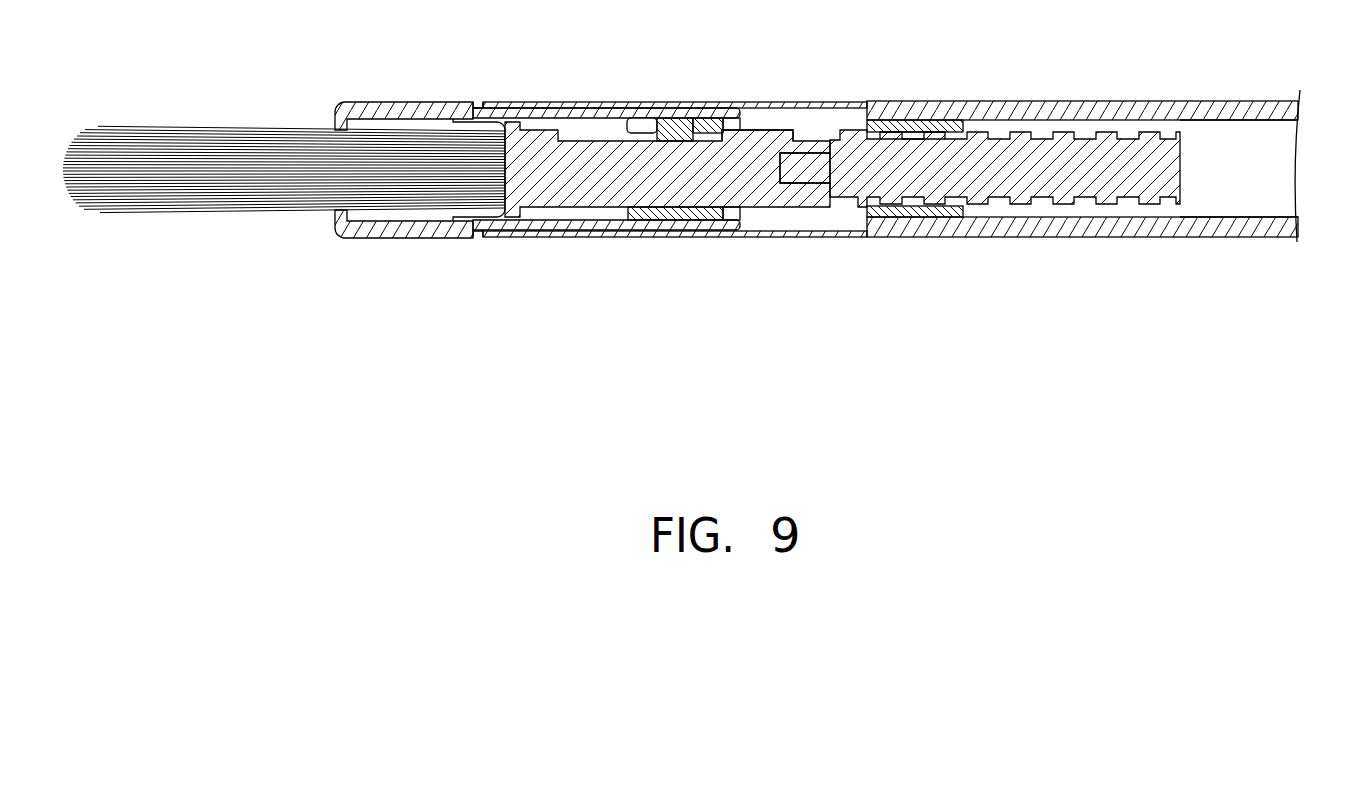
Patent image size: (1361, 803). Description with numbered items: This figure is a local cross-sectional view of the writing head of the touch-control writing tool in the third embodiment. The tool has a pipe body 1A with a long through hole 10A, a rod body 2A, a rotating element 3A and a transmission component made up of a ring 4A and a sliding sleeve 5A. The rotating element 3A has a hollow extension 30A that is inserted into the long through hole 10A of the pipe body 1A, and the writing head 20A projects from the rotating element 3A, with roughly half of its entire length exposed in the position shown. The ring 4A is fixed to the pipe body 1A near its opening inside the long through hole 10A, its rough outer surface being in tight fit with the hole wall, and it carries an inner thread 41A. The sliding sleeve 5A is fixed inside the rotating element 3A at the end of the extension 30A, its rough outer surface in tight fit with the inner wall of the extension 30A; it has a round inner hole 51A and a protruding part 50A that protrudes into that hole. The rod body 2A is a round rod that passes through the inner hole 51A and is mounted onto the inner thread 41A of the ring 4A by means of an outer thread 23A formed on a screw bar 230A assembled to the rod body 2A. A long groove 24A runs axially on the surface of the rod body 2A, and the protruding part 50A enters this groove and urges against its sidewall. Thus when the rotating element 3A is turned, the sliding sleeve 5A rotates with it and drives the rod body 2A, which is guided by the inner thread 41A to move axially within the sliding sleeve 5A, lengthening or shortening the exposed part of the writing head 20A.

The writing head 20A is at (203, 143).
The rotating element 3A is at (410, 233).
The extension 30A is at (568, 226).
The rod body 2A is at (766, 192).
The long groove 24A is at (765, 130).
The inner hole 51A is at (634, 128).
The protruding part 50A is at (678, 128).
The sliding sleeve 5A is at (705, 128).
The outer thread 23A is at (962, 180).
The screw bar 230A is at (800, 185).
The ring 4A is at (953, 130).
The inner thread 41A is at (915, 135).
The pipe body 1A is at (1125, 228).
The long through hole 10A is at (1227, 153).